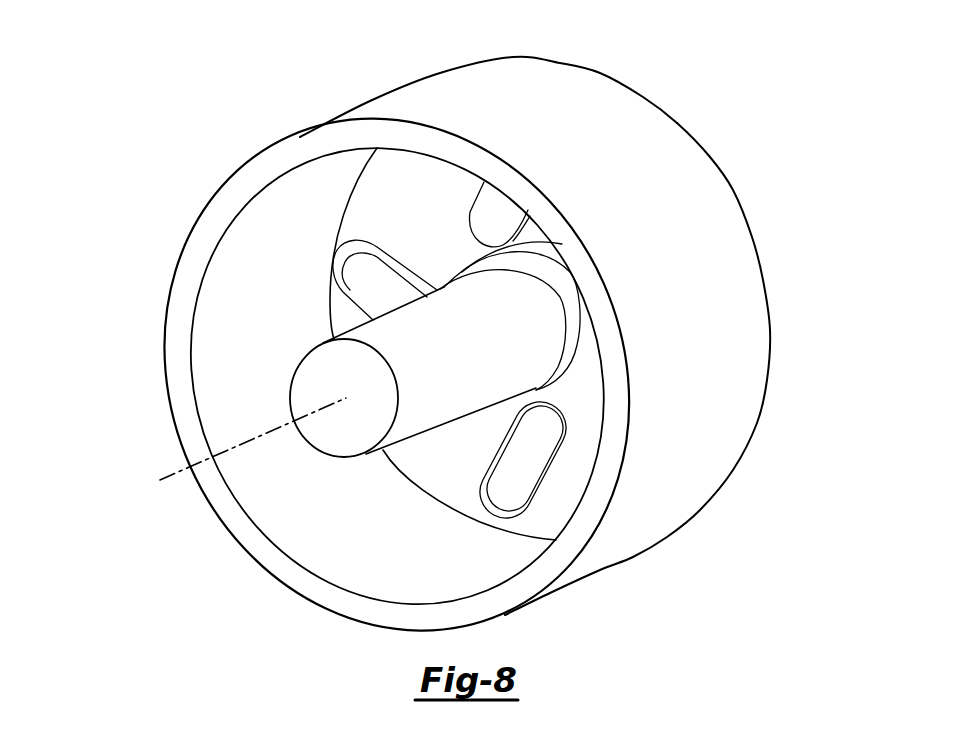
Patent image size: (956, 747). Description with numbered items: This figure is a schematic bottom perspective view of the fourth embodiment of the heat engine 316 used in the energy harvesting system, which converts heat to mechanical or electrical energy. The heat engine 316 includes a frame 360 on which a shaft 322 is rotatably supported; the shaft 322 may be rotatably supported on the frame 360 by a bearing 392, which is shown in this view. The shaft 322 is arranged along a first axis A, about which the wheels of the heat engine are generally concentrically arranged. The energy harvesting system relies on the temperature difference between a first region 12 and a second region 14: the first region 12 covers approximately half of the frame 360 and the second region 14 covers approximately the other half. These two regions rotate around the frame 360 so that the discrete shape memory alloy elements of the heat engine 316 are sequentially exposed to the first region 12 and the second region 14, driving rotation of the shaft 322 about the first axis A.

The frame 360 is at (601, 72).
The first region 12 is at (804, 266).
The heat engine 316 is at (143, 232).
The second region 14 is at (94, 383).
The shaft 322 is at (530, 310).
The bearing 392 is at (502, 402).
The first axis A is at (252, 443).